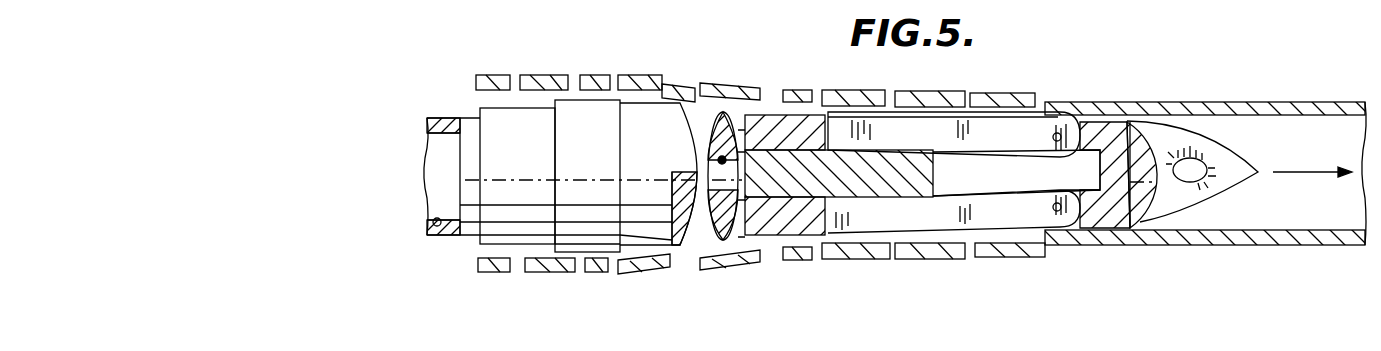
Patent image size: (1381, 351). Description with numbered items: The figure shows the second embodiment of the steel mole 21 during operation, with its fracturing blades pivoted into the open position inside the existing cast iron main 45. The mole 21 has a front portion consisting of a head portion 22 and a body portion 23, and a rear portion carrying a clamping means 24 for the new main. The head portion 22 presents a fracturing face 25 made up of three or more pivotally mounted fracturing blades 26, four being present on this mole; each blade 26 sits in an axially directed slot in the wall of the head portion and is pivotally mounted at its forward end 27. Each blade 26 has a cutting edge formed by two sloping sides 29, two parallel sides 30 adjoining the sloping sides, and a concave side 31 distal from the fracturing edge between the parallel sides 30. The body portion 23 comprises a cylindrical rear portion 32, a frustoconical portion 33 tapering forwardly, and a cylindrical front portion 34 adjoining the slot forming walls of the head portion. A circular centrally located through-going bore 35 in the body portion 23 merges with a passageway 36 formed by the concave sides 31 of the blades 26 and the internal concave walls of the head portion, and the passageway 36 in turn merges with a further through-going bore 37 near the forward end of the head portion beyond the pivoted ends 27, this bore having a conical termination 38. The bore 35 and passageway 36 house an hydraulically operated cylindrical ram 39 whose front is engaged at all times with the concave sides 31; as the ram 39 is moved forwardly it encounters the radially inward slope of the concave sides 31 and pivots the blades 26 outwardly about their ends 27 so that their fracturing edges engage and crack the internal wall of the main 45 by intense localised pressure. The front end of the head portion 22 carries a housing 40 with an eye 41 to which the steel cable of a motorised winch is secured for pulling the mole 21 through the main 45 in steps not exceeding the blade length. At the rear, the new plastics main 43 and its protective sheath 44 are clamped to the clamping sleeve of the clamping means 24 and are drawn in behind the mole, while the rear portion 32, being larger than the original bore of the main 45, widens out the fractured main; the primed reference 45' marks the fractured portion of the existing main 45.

The mole 21 is at (668, 100).
The head portion 22 is at (972, 108).
The body portion 23 is at (620, 105).
The clamping means 24 is at (527, 107).
The fracturing face 25 is at (908, 112).
The fracturing blades 26 is at (1057, 128).
The forward ends of blades 27 is at (1105, 120).
The sloping sides 29 is at (904, 120).
The parallel sides 30 is at (848, 120).
The concave side 31 is at (982, 168).
The cylindrical rear portion 32 is at (598, 266).
The frustoconical portion 33 is at (672, 261).
The cylindrical front portion 34 is at (801, 250).
The through-going bore 35 is at (762, 120).
The passageway 36 is at (1007, 157).
The through-going bore 37 is at (1105, 192).
The conical termination 38 is at (1147, 218).
The cylindrical ram 39 is at (718, 160).
The housing 40 is at (1220, 157).
The eye 41 is at (1187, 152).
The new plastics main 43 is at (437, 228).
The protective sheath 44 is at (470, 123).
The existing cast iron main 45 is at (1168, 147).
The tube segment 45' is at (1010, 273).